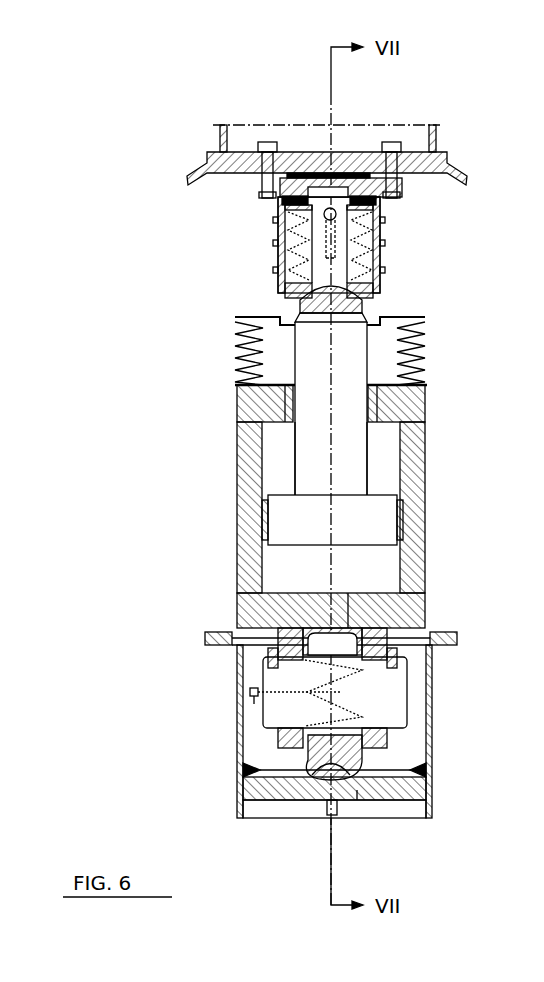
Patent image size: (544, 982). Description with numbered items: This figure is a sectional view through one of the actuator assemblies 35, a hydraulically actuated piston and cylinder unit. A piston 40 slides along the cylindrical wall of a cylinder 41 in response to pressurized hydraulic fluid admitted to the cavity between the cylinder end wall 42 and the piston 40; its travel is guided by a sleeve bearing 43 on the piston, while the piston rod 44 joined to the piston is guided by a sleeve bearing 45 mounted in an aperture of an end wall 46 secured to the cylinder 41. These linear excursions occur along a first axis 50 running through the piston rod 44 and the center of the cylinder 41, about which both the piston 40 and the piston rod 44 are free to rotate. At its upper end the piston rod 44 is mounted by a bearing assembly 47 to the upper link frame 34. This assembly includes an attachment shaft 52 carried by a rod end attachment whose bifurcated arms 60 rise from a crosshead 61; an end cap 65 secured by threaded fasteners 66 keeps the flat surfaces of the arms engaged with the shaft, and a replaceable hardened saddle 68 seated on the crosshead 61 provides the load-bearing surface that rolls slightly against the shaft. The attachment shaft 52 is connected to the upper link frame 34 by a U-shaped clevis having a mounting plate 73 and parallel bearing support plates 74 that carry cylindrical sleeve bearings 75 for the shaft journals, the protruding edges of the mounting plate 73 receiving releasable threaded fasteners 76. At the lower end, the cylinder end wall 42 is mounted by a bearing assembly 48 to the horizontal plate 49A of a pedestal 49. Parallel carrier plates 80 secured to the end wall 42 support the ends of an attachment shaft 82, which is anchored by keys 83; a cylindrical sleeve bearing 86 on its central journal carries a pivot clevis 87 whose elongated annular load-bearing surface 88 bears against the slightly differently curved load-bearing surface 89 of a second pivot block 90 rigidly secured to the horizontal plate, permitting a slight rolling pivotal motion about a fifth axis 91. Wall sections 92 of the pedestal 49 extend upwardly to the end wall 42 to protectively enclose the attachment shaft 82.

The upper link frame 34 is at (433, 140).
The actuator assembly 35 is at (291, 507).
The piston 40 is at (344, 536).
The cylinder 41 is at (250, 436).
The cylinder end wall 42 is at (418, 604).
The sleeve bearing 43 is at (403, 536).
The piston rod 44 is at (344, 449).
The sleeve bearing 45 is at (420, 393).
The end wall 46 is at (245, 401).
The bearing assembly 47 is at (392, 243).
The bearing assembly 48 is at (321, 731).
The pedestal 49 is at (433, 765).
The horizontal plate 49A is at (405, 818).
The first axis 50 is at (331, 385).
The attachment shaft 52 is at (365, 260).
The bifurcated arms 60 is at (378, 275).
The crosshead 61 is at (342, 318).
The end cap 65 is at (300, 176).
The threaded fasteners 66 is at (324, 245).
The replaceable hardened saddle 68 is at (300, 301).
The mounting plate 73 is at (401, 181).
The bearing support plates 74 is at (362, 170).
The cylindrical sleeve bearings 75 is at (280, 214).
The releasable threaded fasteners 76 is at (262, 143).
The carrier plates 80 is at (382, 742).
The attachment shaft 82 is at (384, 704).
The keys 83 is at (394, 651).
The cylindrical sleeve bearing 86 is at (349, 626).
The pivot clevis 87 is at (310, 758).
The elongated annular load-bearing surface 88 is at (363, 820).
The elongated annular load-bearing surface 89 is at (357, 790).
The second pivot block 90 is at (330, 772).
The fifth axis 91 is at (312, 771).
The wall sections 92 is at (240, 716).